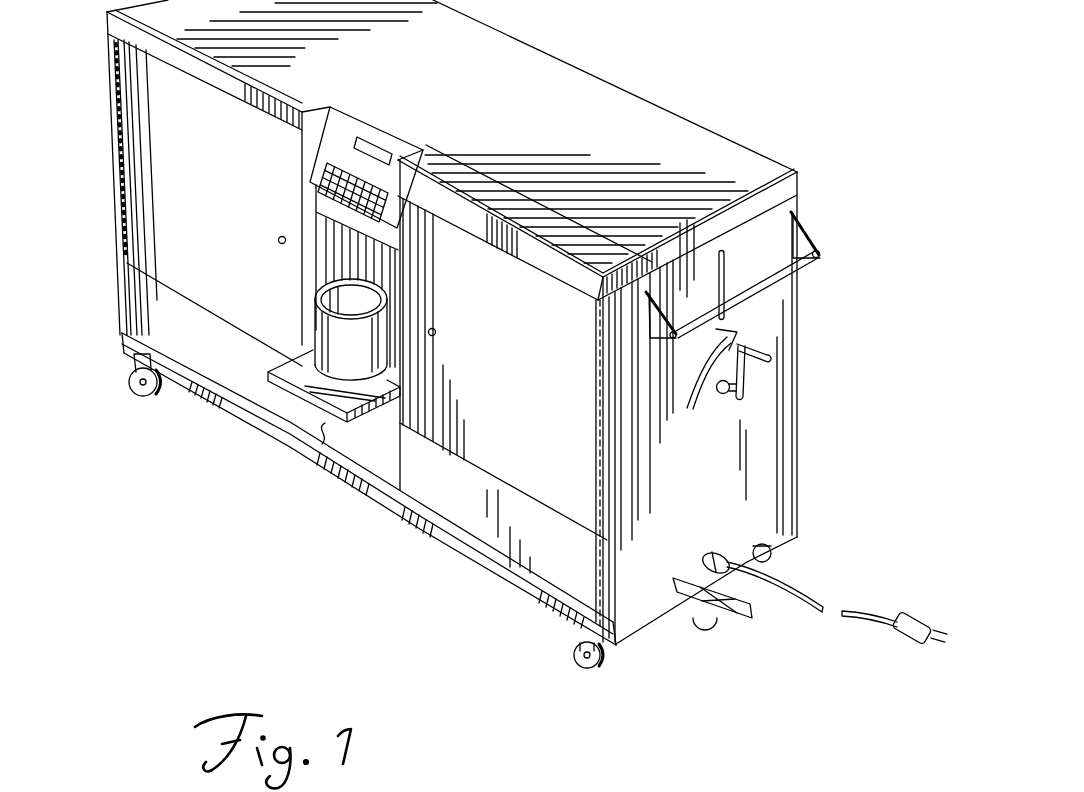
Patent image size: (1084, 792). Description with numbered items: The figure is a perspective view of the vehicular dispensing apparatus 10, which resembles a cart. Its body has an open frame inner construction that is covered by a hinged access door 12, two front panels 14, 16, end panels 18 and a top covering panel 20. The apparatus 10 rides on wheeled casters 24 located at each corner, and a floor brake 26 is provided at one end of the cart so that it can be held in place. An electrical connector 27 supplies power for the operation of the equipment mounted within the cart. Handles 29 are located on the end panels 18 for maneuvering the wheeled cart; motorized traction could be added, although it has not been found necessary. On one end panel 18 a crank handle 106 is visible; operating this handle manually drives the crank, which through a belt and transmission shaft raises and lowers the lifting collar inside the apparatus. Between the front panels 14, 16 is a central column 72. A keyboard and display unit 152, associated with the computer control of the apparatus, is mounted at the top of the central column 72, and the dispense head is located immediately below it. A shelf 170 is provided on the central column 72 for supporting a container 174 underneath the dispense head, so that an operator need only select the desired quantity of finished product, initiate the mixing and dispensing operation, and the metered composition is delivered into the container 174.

The vehicular dispensing apparatus 10 is at (535, 38).
The hinged access door 12 is at (402, 478).
The front panel 14 is at (150, 118).
The front panel 16 is at (557, 495).
The end panel 18 is at (797, 294).
The top covering panel 20 is at (660, 113).
The wheeled caster 24 is at (160, 386).
The floor brake 26 is at (735, 618).
The electrical connector 27 is at (905, 612).
The handle 29 is at (812, 242).
The central column 72 is at (385, 270).
The crank handle 106 is at (769, 355).
The keyboard and display unit 152 is at (386, 152).
The shelf 170 is at (320, 443).
The container 174 is at (322, 327).